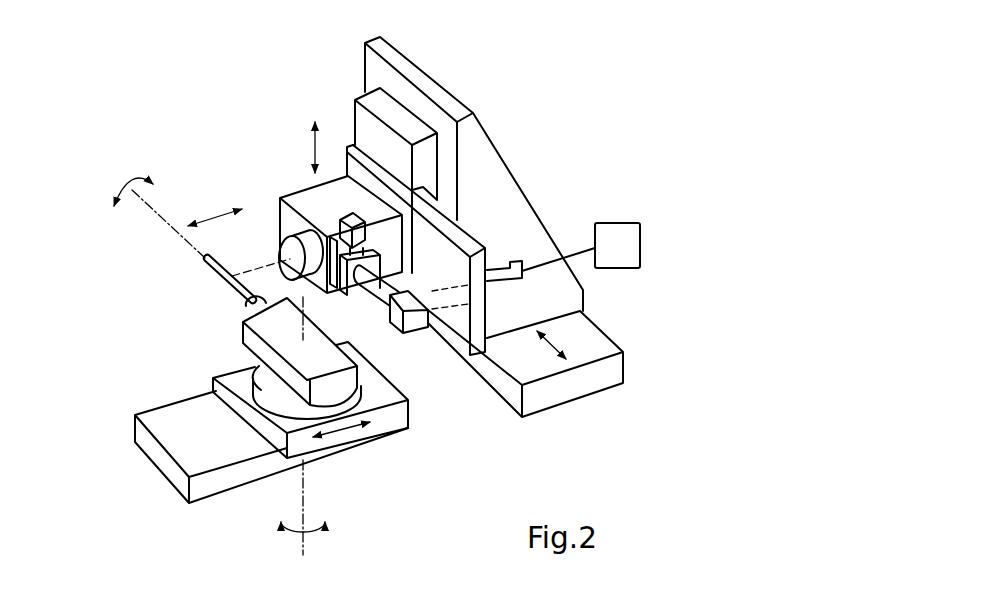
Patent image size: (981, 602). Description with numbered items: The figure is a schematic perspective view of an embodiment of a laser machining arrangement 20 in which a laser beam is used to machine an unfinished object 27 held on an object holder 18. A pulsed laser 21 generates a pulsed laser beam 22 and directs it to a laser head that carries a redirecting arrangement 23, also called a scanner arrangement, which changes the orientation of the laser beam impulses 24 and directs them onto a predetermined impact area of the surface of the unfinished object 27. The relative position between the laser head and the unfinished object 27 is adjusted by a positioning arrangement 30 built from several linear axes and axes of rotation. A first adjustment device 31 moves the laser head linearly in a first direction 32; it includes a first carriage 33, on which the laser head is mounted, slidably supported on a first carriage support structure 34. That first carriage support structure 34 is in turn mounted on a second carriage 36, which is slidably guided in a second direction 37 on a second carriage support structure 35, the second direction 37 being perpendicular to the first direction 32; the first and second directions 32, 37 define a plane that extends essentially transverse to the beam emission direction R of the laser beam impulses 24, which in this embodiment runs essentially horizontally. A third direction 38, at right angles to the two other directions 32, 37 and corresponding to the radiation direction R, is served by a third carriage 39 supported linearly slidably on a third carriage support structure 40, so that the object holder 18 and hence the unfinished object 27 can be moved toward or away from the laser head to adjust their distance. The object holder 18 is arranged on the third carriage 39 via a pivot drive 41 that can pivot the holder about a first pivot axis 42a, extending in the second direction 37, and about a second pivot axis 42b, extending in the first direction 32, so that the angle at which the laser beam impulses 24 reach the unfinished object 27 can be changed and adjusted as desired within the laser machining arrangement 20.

The object holder 18 is at (247, 300).
The laser machining arrangement 20 is at (608, 120).
The pulsed laser 21 is at (625, 233).
The pulsed laser beam 22 is at (528, 271).
The redirecting arrangement 23 is at (363, 203).
The laser beam impulses 24 is at (268, 263).
The unfinished object 27 is at (225, 283).
The positioning arrangement 30 is at (402, 440).
The first adjustment device 31 is at (636, 297).
The first direction 32 is at (313, 146).
The first carriage 33 is at (363, 168).
The first carriage support structure 34 is at (362, 117).
The base slide 35 is at (575, 387).
The second carriage 36 is at (500, 205).
The second direction 37 is at (550, 342).
The third direction 38 is at (342, 430).
The third carriage 39 is at (213, 378).
The third carriage support structure 40 is at (167, 465).
The pivot drive 41 is at (257, 390).
The first pivot axis 42a is at (167, 223).
The second pivot axis 42b is at (322, 553).
The beam emission direction R is at (212, 217).